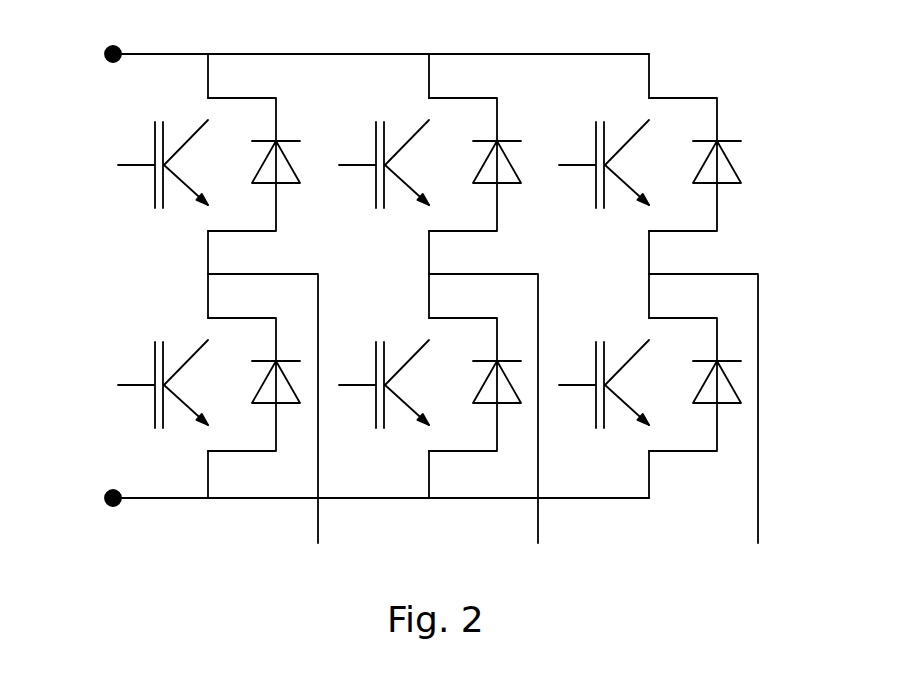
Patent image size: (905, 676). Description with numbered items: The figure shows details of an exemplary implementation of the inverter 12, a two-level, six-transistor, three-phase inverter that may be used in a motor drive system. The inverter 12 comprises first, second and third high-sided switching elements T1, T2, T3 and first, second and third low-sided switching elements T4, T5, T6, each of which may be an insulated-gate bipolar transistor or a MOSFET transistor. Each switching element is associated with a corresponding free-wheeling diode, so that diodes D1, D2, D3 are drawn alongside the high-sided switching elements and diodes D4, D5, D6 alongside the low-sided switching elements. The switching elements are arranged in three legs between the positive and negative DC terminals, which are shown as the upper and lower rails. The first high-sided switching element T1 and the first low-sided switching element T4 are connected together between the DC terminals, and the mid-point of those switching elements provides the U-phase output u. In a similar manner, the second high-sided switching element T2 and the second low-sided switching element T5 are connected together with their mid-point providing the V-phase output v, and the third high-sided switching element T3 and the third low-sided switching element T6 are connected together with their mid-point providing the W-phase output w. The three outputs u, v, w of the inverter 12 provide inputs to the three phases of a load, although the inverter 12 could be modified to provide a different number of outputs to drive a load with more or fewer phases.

The inverter 12 is at (435, 323).
The first high-sided switching element T1 is at (163, 134).
The second high-sided switching element T2 is at (384, 134).
The third high-sided switching element T3 is at (604, 134).
The first low-sided switching element T4 is at (163, 358).
The second low-sided switching element T5 is at (384, 358).
The third low-sided switching element T6 is at (604, 358).
The free-wheeling diode D1 is at (254, 146).
The free-wheeling diode D2 is at (475, 146).
The free-wheeling diode D3 is at (695, 146).
The free-wheeling diode D4 is at (254, 369).
The free-wheeling diode D5 is at (475, 369).
The free-wheeling diode D6 is at (695, 369).
The U-phase output u is at (317, 558).
The V-phase output v is at (538, 558).
The W-phase output w is at (758, 558).